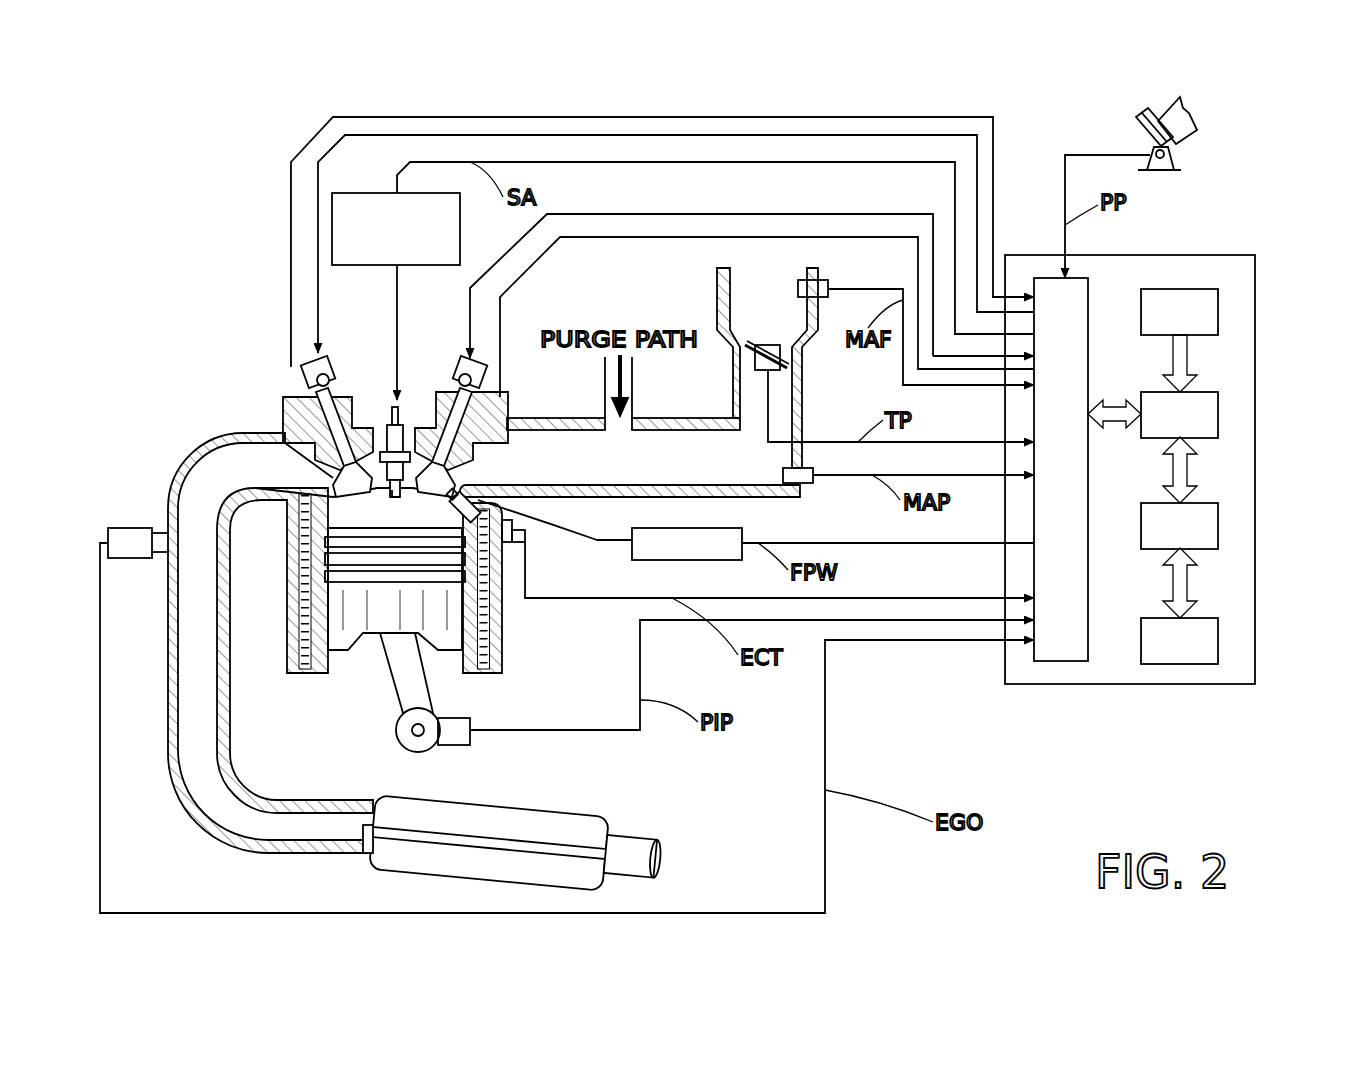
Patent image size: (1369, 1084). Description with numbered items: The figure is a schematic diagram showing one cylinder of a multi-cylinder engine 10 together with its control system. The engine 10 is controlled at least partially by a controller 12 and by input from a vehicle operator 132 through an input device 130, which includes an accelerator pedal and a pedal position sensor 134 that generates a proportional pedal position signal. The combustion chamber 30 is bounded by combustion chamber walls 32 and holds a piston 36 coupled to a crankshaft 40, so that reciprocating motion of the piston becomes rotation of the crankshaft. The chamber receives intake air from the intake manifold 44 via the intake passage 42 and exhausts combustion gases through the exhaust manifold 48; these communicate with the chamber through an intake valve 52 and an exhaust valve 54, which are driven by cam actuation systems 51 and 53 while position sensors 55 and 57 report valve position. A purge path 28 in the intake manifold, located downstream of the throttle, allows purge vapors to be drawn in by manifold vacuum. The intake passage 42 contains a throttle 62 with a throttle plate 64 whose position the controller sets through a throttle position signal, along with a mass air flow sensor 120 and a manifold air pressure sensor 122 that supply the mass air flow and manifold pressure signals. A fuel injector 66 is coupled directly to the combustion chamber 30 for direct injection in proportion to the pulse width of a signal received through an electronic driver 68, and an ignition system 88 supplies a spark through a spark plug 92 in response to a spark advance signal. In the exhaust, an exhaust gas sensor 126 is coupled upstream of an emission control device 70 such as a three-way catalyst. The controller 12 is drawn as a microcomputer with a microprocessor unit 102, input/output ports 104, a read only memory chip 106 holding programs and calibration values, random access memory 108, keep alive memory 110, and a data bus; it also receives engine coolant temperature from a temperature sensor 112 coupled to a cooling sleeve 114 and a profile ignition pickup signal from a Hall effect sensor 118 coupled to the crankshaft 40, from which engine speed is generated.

The engine 10 is at (208, 341).
The controller 12 is at (1181, 454).
The purge path 28 is at (626, 395).
The combustion chamber 30 is at (392, 507).
The combustion chamber walls 32 is at (333, 660).
The piston 36 is at (375, 620).
The crankshaft 40 is at (407, 752).
The intake passage 42 is at (782, 315).
The intake manifold 44 is at (707, 470).
The exhaust manifold 48 is at (262, 478).
The cam actuation system 51 is at (460, 358).
The intake valve 52 is at (470, 470).
The cam actuation system 53 is at (330, 358).
The exhaust valve 54 is at (325, 458).
The position sensor 55 is at (490, 380).
The position sensor 57 is at (305, 385).
The throttle 62 is at (800, 352).
The throttle plate 64 is at (745, 350).
The fuel injector 66 is at (483, 503).
The electronic driver 68 is at (645, 560).
The emission control device 70 is at (565, 810).
The ignition system 88 is at (343, 193).
The spark plug 92 is at (401, 408).
The microprocessor unit 102 is at (1218, 418).
The input/output ports 104 is at (1090, 283).
The read only memory chip 106 is at (1218, 315).
The random access memory 108 is at (1218, 528).
The keep alive memory 110 is at (1218, 643).
The temperature sensor 112 is at (513, 542).
The cooling sleeve 114 is at (493, 628).
The Hall effect sensor 118 is at (468, 746).
The mass air flow sensor 120 is at (816, 283).
The manifold air pressure sensor 122 is at (803, 483).
The exhaust gas sensor 126 is at (108, 537).
The input device 130 is at (1138, 130).
The vehicle operator 132 is at (1190, 112).
The pedal position sensor 134 is at (1180, 160).